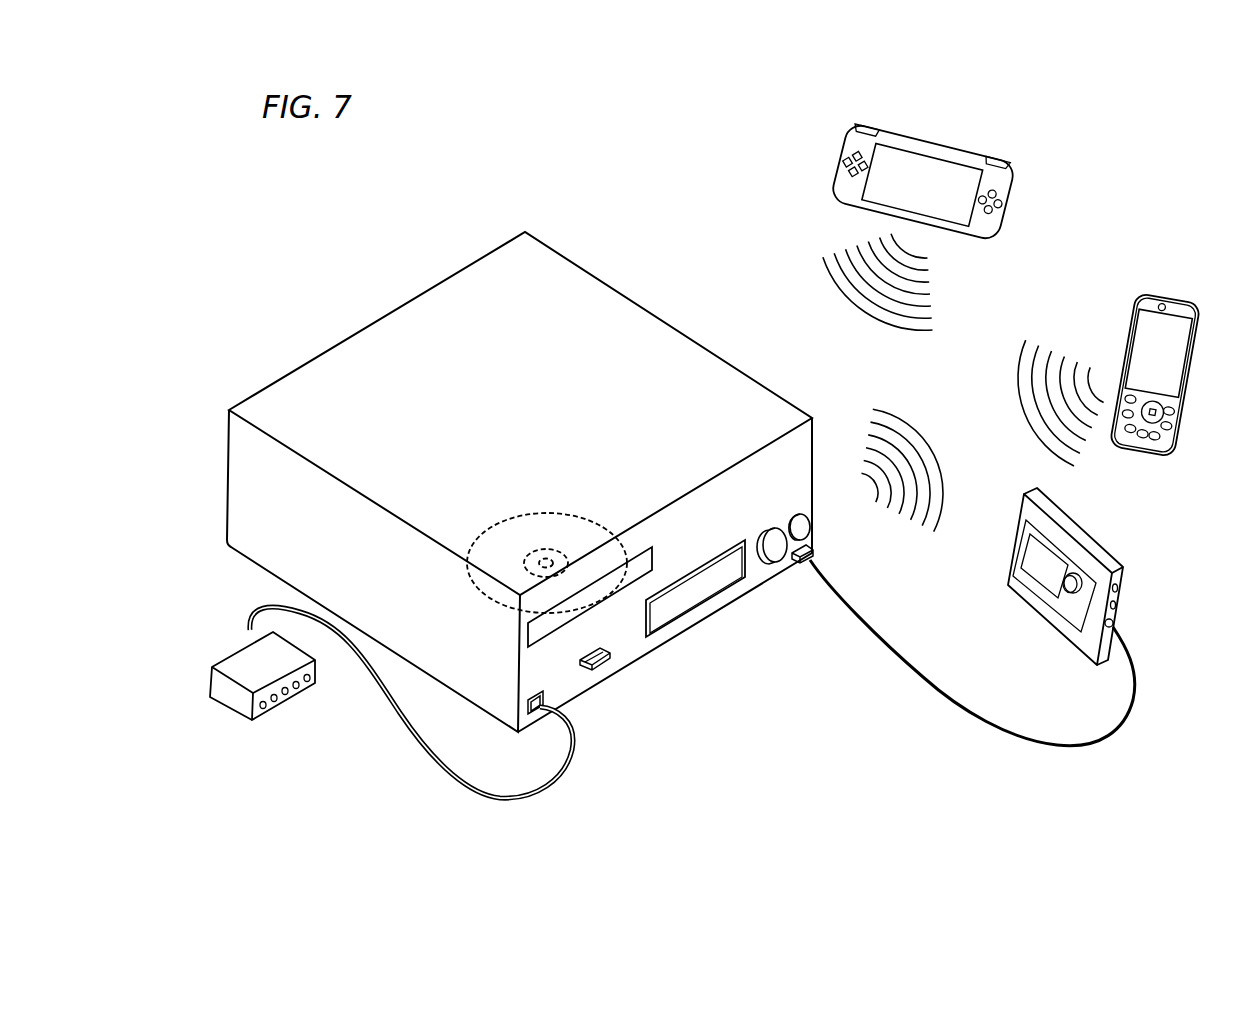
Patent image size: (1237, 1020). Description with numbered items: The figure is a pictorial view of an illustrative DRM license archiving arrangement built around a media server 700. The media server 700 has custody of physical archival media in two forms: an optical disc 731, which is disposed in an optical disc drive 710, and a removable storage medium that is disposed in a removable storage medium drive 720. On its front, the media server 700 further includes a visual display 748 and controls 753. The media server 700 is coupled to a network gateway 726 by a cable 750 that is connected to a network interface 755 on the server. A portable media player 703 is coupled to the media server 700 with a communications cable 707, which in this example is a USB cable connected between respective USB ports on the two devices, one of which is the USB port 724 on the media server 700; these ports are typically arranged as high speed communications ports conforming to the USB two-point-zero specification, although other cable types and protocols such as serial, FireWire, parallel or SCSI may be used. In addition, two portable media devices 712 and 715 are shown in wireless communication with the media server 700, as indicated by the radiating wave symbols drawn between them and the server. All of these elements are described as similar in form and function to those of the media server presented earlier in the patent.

The media server 700 is at (519, 482).
The portable media player 703 is at (1064, 640).
The communications cable 707 is at (963, 704).
The optical disc drive 710 is at (528, 634).
The portable media device 712 is at (963, 142).
The portable media device 715 is at (1172, 297).
The removable storage medium drive 720 is at (602, 650).
The USB port 724 is at (814, 549).
The network gateway 726 is at (230, 722).
The optical disc 731 is at (470, 578).
The visual display 748 is at (721, 598).
The cable 750 is at (411, 742).
The controls 753 is at (802, 527).
The network interface 755 is at (531, 720).